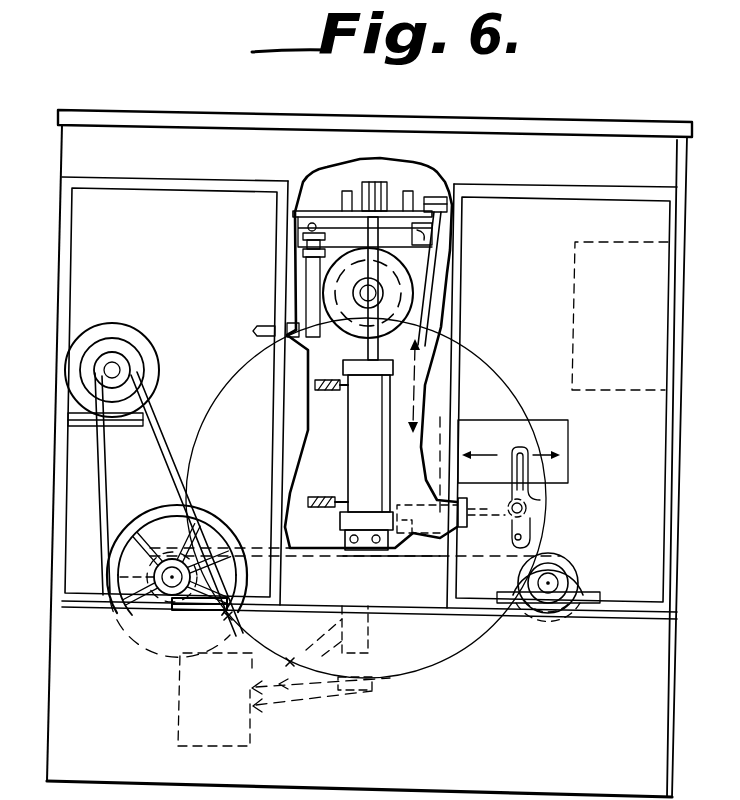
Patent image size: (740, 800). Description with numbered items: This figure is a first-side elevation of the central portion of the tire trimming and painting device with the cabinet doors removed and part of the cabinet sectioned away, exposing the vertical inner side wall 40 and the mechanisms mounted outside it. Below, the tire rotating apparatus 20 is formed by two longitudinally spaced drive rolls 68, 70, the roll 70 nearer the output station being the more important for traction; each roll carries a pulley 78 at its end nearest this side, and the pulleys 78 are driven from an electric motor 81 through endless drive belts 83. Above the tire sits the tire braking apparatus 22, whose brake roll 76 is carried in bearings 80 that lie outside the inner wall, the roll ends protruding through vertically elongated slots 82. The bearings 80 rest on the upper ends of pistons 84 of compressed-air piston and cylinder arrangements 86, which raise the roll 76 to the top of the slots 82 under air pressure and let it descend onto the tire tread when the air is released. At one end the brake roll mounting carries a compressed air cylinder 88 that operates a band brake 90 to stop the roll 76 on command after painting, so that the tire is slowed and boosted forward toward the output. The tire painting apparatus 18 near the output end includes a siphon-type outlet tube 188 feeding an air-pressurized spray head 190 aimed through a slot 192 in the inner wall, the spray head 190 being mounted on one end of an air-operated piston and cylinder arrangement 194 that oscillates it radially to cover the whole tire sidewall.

The tire painting apparatus 18 is at (560, 503).
The tire rotating apparatus 20 is at (159, 490).
The tire braking apparatus 22 is at (440, 267).
The inner side wall 40 is at (122, 278).
The drive roll 68 is at (232, 540).
The drive roll 70 is at (550, 547).
The brake roll 76 is at (352, 320).
The pulley 78 is at (168, 558).
The bearing 80 is at (407, 257).
The electric motor 81 is at (152, 358).
The vertically elongated slot 82 is at (295, 553).
The endless drive belt 83 is at (100, 452).
The piston 84 is at (350, 357).
The piston and cylinder arrangement 86 is at (340, 473).
The compressed air cylinder 88 is at (312, 302).
The band brake 90 is at (428, 283).
The siphon-type outlet tube 188 is at (507, 500).
The spray head 190 is at (518, 444).
The slot 192 is at (563, 441).
The piston and cylinder arrangement 194 is at (412, 548).